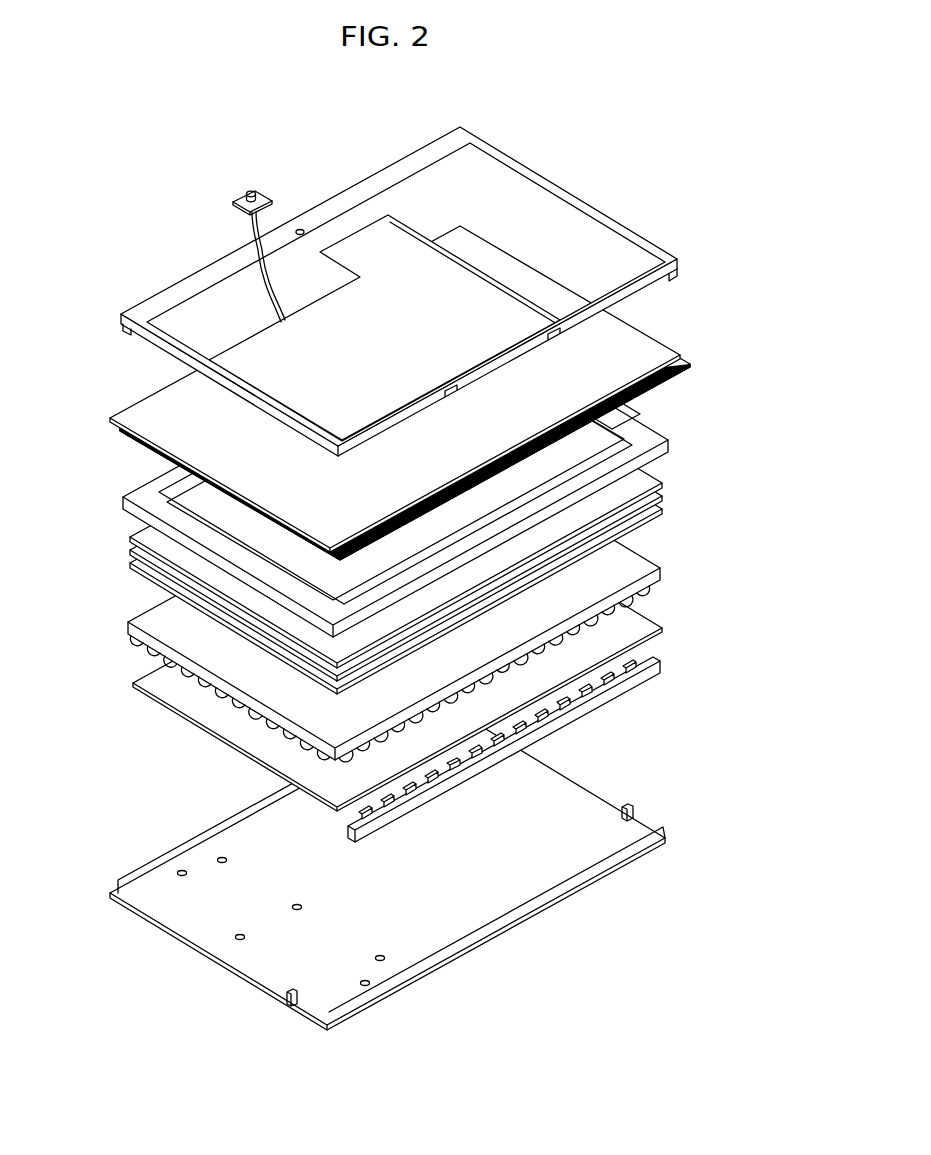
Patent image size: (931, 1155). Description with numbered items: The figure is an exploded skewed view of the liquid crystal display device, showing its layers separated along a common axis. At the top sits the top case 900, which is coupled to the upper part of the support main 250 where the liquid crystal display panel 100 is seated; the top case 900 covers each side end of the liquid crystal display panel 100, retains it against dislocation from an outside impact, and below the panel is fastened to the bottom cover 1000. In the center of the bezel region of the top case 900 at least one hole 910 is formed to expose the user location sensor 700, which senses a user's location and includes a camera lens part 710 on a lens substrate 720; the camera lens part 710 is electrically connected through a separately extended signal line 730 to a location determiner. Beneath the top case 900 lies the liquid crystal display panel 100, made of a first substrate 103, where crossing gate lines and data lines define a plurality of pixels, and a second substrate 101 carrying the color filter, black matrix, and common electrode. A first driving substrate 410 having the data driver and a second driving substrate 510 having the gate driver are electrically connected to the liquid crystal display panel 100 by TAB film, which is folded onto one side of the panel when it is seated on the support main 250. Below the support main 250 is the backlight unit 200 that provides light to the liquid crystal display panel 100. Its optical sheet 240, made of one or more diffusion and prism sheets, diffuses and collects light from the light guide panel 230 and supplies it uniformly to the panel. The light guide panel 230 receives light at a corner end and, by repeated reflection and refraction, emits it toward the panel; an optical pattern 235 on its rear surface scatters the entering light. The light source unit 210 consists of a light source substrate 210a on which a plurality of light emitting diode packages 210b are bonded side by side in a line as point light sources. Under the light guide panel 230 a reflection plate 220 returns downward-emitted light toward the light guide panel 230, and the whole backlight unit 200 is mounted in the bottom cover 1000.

The liquid crystal display panel 100 is at (427, 282).
The second substrate 101 is at (480, 288).
The first substrate 103 is at (547, 303).
The backlight unit 200 is at (448, 577).
The light source unit 210 is at (562, 736).
The light source substrate 210a is at (660, 668).
The light emitting diode packages 210b is at (633, 655).
The reflection plate 220 is at (650, 625).
The light guide panel 230 is at (396, 602).
The optical pattern 235 is at (192, 675).
The optical sheet 240 is at (662, 480).
The support main 250 is at (425, 474).
The first driving substrate 410 is at (126, 414).
The second driving substrate 510 is at (663, 353).
The user location sensor 700 is at (215, 205).
The camera lens part 710 is at (265, 161).
The lens substrate 720 is at (240, 203).
The signal line 730 is at (265, 290).
The top case 900 is at (368, 291).
The hole 910 is at (300, 229).
The bottom cover 1000 is at (160, 907).